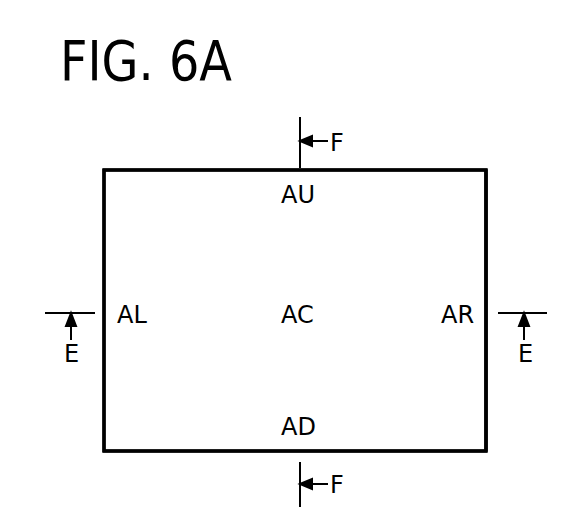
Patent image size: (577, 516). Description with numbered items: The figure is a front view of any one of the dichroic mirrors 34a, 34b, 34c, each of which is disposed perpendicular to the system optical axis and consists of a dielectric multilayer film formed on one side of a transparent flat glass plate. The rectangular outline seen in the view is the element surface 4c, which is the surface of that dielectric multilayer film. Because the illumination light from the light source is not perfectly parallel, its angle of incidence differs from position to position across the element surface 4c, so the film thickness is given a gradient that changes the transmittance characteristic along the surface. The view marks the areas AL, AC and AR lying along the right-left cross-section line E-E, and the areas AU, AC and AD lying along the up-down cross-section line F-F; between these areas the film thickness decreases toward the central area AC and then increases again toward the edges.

The dichroic mirror 34a is at (506, 89).
The dichroic mirror 34b is at (295, 310).
The dichroic mirror 34c is at (295, 310).
The element surface 4c is at (465, 250).